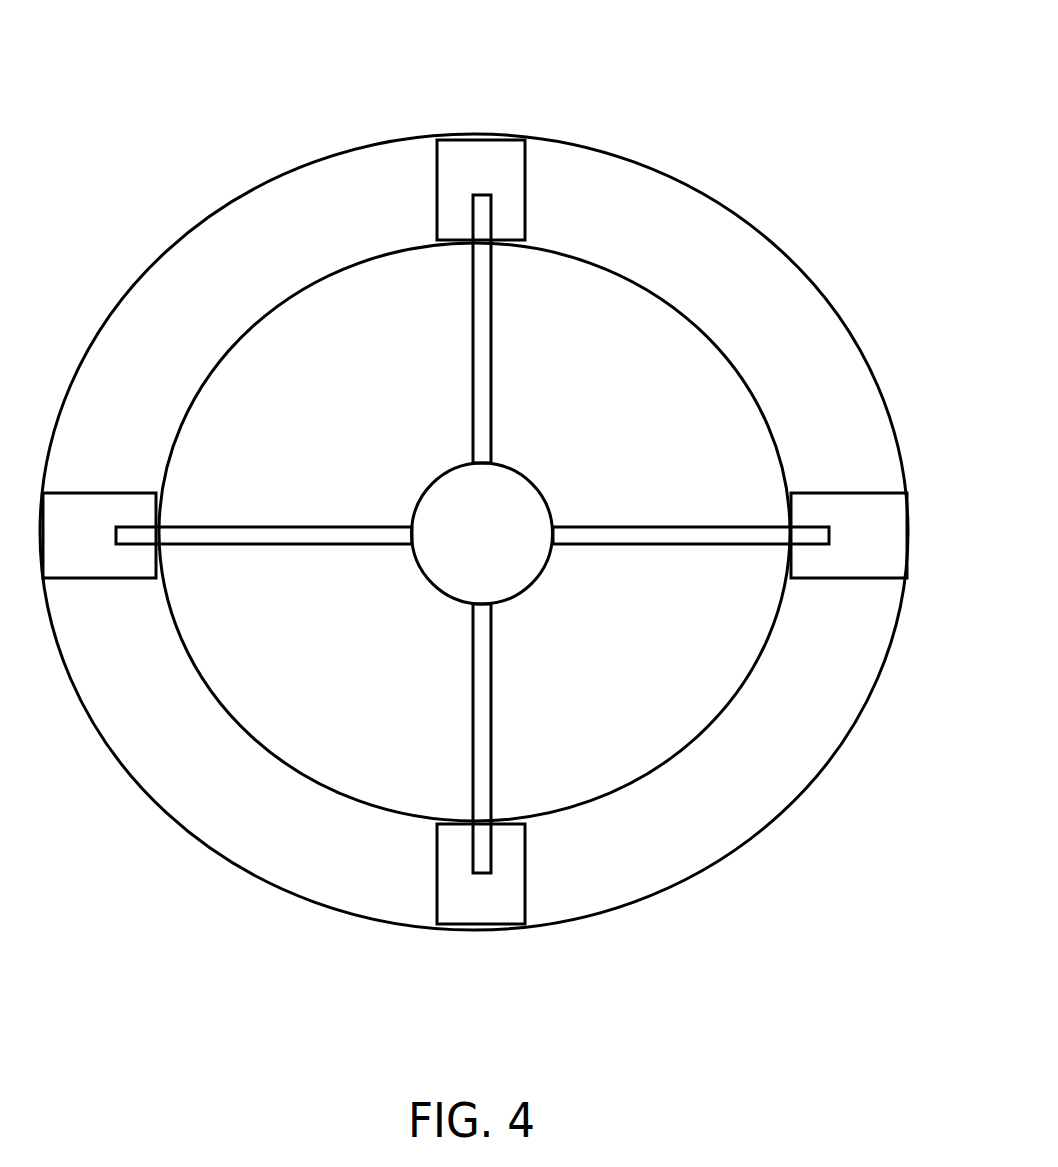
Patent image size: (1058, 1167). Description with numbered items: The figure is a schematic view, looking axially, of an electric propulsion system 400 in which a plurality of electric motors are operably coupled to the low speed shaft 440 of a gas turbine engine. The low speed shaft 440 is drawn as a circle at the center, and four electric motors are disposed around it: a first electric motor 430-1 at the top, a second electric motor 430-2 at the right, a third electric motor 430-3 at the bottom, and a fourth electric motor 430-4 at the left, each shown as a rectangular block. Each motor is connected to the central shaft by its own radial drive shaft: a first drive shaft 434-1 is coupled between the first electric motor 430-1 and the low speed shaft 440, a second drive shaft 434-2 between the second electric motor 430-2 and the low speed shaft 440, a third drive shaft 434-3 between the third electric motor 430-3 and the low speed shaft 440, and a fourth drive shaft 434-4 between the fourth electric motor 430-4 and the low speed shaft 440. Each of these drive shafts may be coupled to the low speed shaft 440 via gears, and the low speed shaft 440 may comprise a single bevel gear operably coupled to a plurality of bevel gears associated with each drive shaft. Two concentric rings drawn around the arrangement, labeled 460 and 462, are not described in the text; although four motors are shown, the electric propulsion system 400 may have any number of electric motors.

The electric propulsion system 400 is at (787, 108).
The outer ring 460 is at (657, 168).
The inner ring 462 is at (702, 335).
The low speed shaft 440 is at (528, 477).
The first electric motor 430-1 is at (512, 173).
The second electric motor 430-2 is at (855, 570).
The third electric motor 430-3 is at (520, 857).
The fourth electric motor 430-4 is at (113, 570).
The first drive shaft 434-1 is at (483, 315).
The second drive shaft 434-2 is at (682, 537).
The third drive shaft 434-3 is at (483, 675).
The fourth drive shaft 434-4 is at (300, 537).